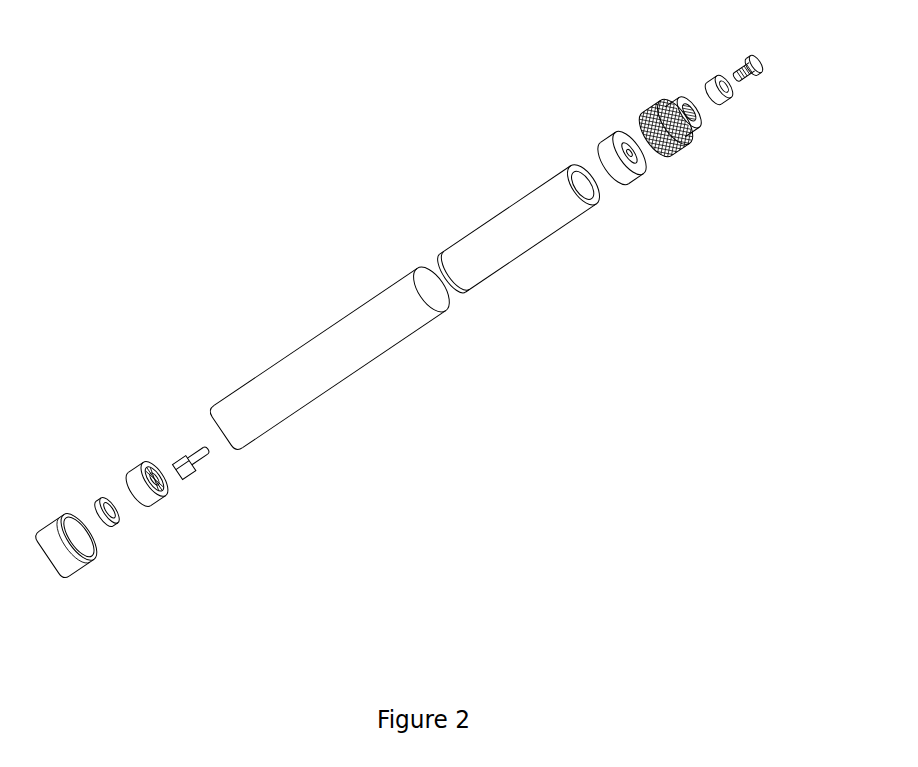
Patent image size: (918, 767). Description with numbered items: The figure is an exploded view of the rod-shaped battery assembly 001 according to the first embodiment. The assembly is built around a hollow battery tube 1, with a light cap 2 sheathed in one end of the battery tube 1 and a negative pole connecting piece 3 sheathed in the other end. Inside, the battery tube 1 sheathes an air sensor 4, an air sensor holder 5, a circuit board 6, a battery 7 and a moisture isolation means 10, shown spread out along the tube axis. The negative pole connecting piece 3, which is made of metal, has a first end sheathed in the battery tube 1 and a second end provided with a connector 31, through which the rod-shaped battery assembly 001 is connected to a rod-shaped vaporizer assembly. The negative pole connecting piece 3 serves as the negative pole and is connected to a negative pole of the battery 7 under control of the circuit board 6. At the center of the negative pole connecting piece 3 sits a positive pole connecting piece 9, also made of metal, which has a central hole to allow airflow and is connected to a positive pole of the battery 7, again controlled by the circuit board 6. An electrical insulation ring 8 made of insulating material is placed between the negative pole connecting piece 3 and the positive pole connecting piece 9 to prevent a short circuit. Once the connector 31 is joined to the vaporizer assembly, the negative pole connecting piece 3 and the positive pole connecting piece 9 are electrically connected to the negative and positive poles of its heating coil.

The rod-shaped battery assembly 001 is at (196, 212).
The hollow battery tube 1 is at (343, 363).
The light cap 2 is at (88, 568).
The negative pole connecting piece 3 is at (669, 113).
The connector 31 is at (672, 93).
The air sensor 4 is at (119, 525).
The air sensor holder 5 is at (155, 503).
The circuit board 6 is at (199, 470).
The battery 7 is at (515, 228).
The electrical insulation ring 8 is at (724, 98).
The positive pole connecting piece 9 is at (763, 73).
The moisture isolation means 10 is at (634, 183).